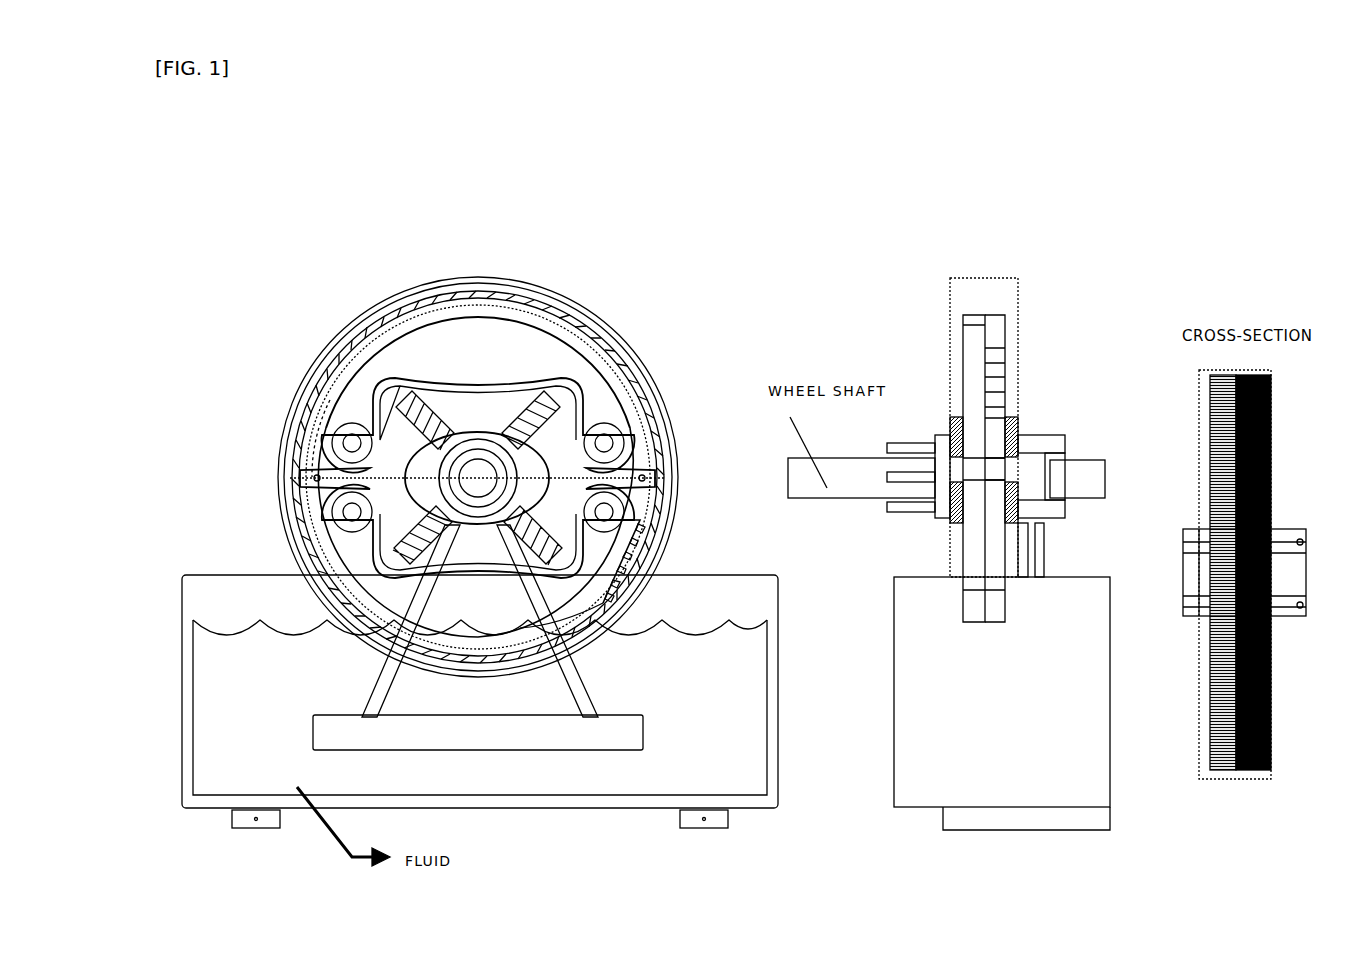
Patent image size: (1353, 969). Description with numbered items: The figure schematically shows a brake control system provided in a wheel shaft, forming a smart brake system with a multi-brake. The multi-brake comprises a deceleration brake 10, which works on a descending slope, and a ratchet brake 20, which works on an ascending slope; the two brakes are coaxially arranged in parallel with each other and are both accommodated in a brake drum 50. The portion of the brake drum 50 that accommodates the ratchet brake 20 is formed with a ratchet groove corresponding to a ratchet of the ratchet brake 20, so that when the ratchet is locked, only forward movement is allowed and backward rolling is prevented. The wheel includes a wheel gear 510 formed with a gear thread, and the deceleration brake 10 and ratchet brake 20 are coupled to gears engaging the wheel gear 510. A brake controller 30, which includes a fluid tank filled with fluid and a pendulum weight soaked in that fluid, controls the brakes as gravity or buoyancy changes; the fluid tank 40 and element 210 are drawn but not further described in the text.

The deceleration brake 10 is at (632, 385).
The ratchet brake 20 is at (357, 385).
The brake controller 30 is at (597, 735).
The fluid tank 40 is at (720, 735).
The brake drum 50 is at (460, 280).
The wheel gear 510 is at (325, 372).
The inner ring teeth 210 is at (335, 393).